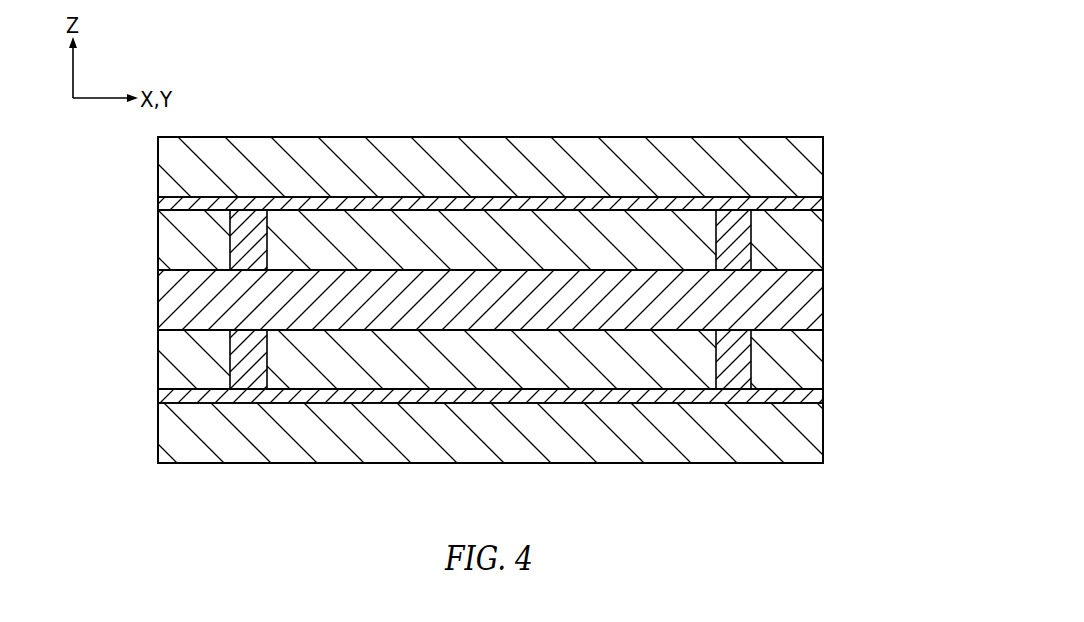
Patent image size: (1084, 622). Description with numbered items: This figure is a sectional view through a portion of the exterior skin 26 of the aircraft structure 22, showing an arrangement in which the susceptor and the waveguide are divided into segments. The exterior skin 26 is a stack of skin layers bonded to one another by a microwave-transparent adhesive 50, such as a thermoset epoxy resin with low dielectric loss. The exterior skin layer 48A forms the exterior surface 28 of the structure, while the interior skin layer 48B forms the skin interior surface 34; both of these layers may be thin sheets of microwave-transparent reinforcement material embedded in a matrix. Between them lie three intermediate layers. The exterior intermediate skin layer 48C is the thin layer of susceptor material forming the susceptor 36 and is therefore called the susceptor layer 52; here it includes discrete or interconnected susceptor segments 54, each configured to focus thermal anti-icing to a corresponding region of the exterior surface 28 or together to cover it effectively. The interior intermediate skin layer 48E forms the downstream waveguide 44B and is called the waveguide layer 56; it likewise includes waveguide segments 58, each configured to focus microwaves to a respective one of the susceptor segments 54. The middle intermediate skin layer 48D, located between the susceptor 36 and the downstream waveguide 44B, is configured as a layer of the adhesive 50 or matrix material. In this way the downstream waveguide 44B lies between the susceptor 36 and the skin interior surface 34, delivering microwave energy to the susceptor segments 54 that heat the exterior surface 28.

The aircraft structure 22 is at (824, 88).
The exterior skin 26 is at (490, 300).
The exterior surface 28 is at (380, 137).
The skin interior surface 34 is at (345, 463).
The susceptor 36 is at (835, 252).
The susceptor layer 52 is at (490, 240).
The downstream waveguide 44B is at (835, 358).
The waveguide layer 56 is at (490, 359).
The exterior skin layer 48A is at (137, 168).
The interior skin layer 48B is at (137, 435).
The intermediate skin layer 48C is at (137, 242).
The intermediate skin layer 48D is at (137, 302).
The intermediate skin layer 48E is at (137, 362).
The adhesive 50 is at (823, 203).
The susceptor segments 54 is at (200, 223).
The waveguide segments 58 is at (195, 375).